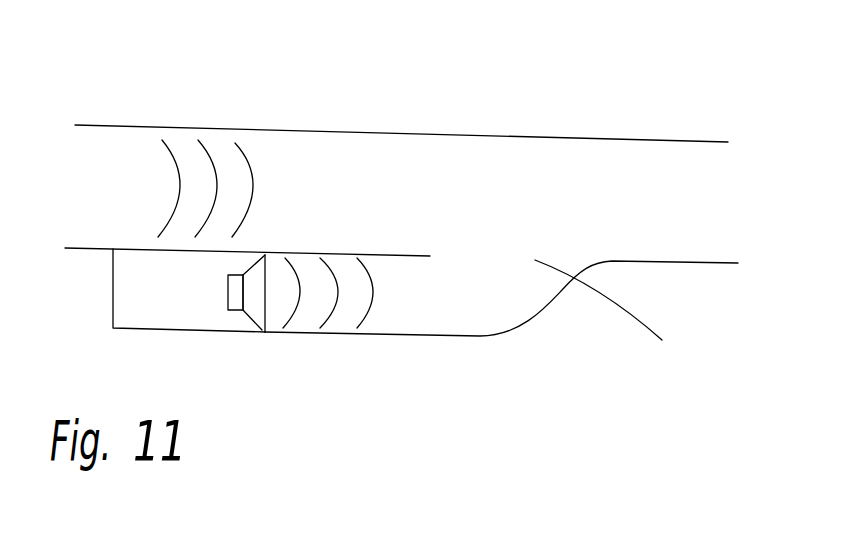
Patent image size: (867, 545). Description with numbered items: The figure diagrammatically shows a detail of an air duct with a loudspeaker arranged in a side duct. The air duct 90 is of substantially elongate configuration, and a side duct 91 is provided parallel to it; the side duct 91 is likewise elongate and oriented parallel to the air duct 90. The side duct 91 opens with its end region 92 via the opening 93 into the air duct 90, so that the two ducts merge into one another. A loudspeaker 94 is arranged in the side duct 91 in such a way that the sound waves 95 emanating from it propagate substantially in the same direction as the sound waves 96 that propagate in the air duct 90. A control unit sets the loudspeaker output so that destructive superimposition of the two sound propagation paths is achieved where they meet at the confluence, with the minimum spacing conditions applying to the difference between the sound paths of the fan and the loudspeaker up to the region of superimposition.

The air duct 90 is at (480, 130).
The side duct 91 is at (202, 325).
The end region 92 is at (482, 265).
The opening 93 is at (627, 321).
The loudspeaker 94 is at (257, 332).
The sound waves 95 is at (357, 312).
The sound waves 96 is at (218, 150).